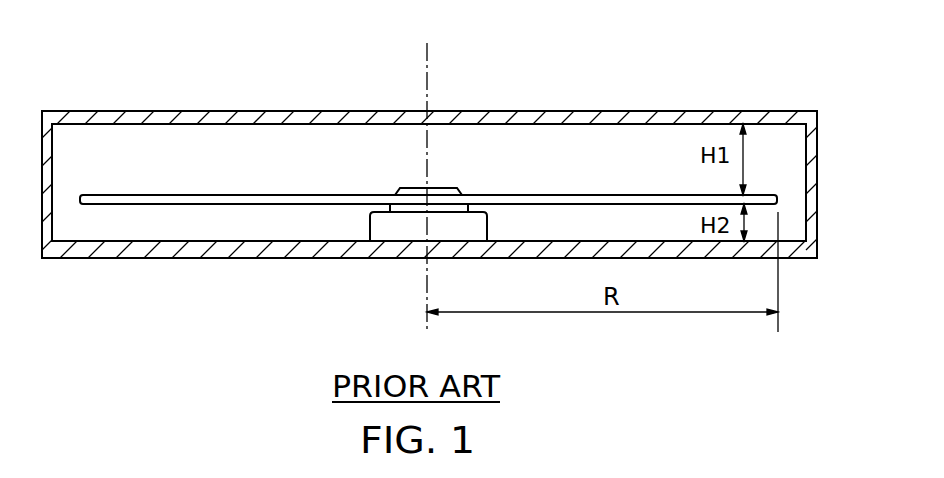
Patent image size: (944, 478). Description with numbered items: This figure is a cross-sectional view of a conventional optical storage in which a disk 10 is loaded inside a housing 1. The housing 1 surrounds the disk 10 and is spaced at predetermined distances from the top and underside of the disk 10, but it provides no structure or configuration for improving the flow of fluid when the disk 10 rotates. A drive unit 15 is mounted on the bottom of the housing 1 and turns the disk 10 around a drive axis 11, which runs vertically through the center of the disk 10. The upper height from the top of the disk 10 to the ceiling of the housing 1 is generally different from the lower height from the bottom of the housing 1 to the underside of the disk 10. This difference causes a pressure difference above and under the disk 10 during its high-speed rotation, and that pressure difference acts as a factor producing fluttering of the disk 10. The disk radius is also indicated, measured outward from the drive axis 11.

The housing 1 is at (676, 118).
The disk 10 is at (190, 198).
The drive axis 11 is at (427, 55).
The drive unit 15 is at (400, 232).